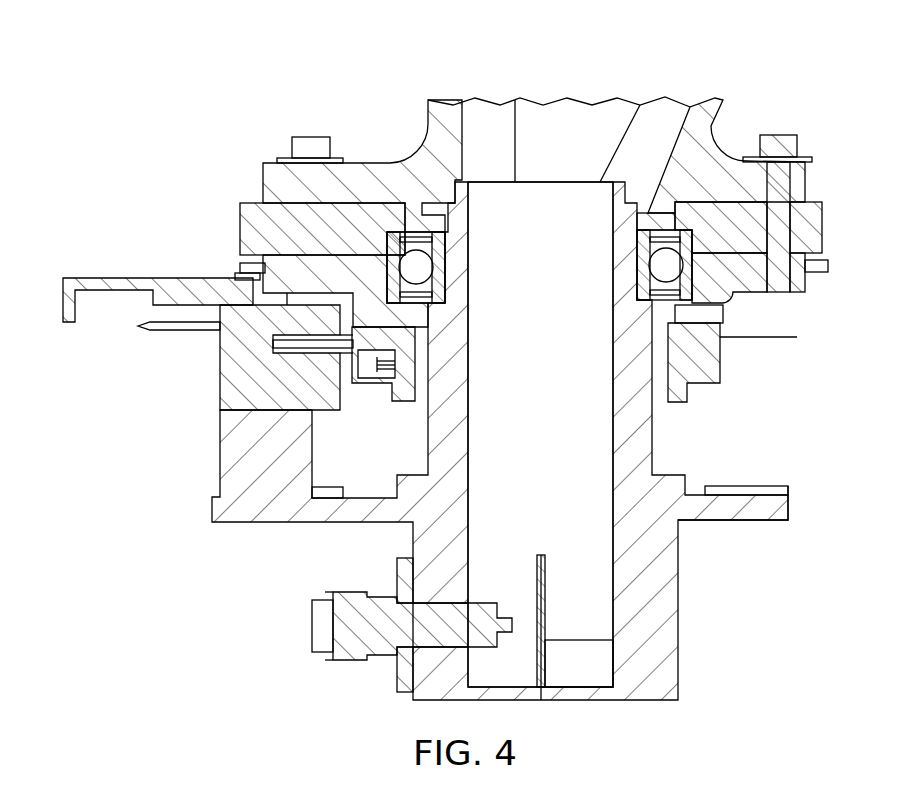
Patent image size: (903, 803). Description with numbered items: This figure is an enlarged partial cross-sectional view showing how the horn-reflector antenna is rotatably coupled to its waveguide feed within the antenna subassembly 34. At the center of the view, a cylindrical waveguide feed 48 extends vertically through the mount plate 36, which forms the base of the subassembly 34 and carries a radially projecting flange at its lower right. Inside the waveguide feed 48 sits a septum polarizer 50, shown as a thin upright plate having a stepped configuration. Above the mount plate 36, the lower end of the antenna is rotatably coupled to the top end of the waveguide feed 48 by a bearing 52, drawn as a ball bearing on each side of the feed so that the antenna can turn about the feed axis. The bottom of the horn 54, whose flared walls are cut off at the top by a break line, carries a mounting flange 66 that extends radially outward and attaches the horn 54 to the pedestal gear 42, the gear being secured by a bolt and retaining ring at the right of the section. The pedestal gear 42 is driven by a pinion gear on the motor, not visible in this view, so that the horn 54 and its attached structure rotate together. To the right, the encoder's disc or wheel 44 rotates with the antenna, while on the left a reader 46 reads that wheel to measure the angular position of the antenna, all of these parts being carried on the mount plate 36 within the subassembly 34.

The subassembly 34 is at (425, 364).
The mount plate 36 is at (743, 521).
The pedestal gear 42 is at (822, 224).
The encoder disc or wheel 44 is at (773, 338).
The reader 46 is at (227, 380).
The waveguide feed 48 is at (500, 193).
The septum polarizer 50 is at (545, 586).
The bearing 52 is at (675, 270).
The horn 54 is at (702, 112).
The mounting flange 66 is at (268, 184).